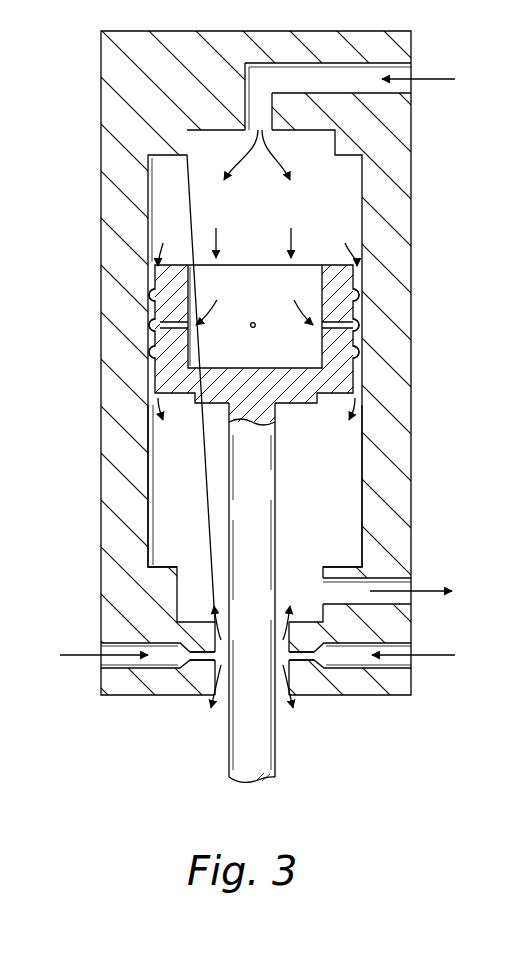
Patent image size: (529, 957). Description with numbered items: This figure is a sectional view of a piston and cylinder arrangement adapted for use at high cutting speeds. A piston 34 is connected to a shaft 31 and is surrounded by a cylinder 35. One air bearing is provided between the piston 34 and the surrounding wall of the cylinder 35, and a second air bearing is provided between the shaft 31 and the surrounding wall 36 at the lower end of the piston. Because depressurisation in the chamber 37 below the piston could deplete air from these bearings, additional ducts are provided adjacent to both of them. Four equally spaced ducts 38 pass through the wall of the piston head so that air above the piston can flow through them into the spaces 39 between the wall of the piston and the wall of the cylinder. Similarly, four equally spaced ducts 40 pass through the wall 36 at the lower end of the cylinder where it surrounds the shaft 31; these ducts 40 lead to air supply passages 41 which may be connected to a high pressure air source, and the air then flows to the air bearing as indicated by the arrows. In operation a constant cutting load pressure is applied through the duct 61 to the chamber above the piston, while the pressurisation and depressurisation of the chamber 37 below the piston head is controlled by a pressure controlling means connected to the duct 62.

The shaft 31 is at (242, 756).
The piston 34 is at (348, 381).
The cylinder 35 is at (411, 363).
The surrounding wall 36 is at (287, 678).
The chamber 37 is at (328, 499).
The ducts 38 is at (173, 327).
The spaces 39 is at (155, 352).
The ducts 40 is at (205, 668).
The air supply passages 41 is at (105, 660).
The duct 61 is at (404, 73).
The duct 62 is at (403, 589).